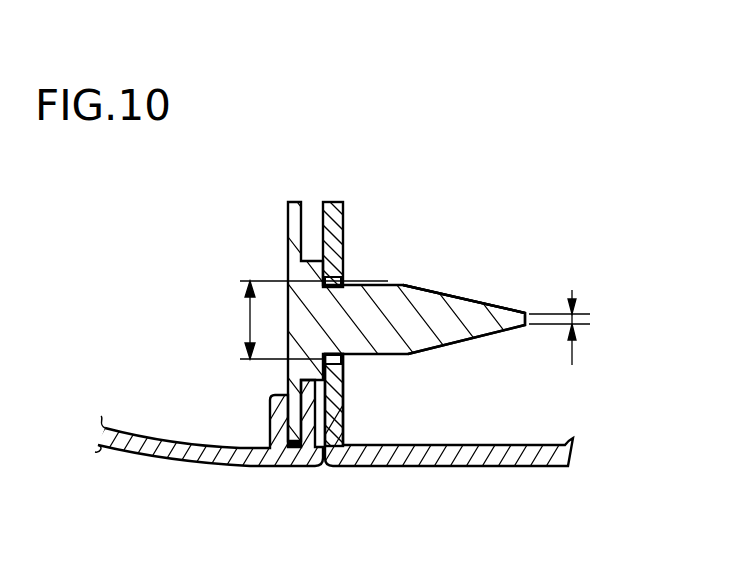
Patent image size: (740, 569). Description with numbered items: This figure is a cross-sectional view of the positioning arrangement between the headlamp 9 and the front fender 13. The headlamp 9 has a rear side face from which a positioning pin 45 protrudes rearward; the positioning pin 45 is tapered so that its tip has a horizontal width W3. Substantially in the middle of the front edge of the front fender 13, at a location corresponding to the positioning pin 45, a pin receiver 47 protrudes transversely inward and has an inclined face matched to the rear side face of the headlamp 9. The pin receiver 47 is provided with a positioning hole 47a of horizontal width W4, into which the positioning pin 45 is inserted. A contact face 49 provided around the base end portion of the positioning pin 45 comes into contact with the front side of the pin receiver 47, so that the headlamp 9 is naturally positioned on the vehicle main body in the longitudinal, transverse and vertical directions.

The pin receiver 47 is at (313, 213).
The positioning hole 47a is at (333, 285).
The positioning pin 45 is at (424, 285).
The contact face 49 is at (344, 270).
The headlamp 9 is at (190, 466).
The front fender 13 is at (526, 466).
The horizontal width of positioning hole W4 is at (296, 320).
The tip width of positioning pin W3 is at (581, 327).